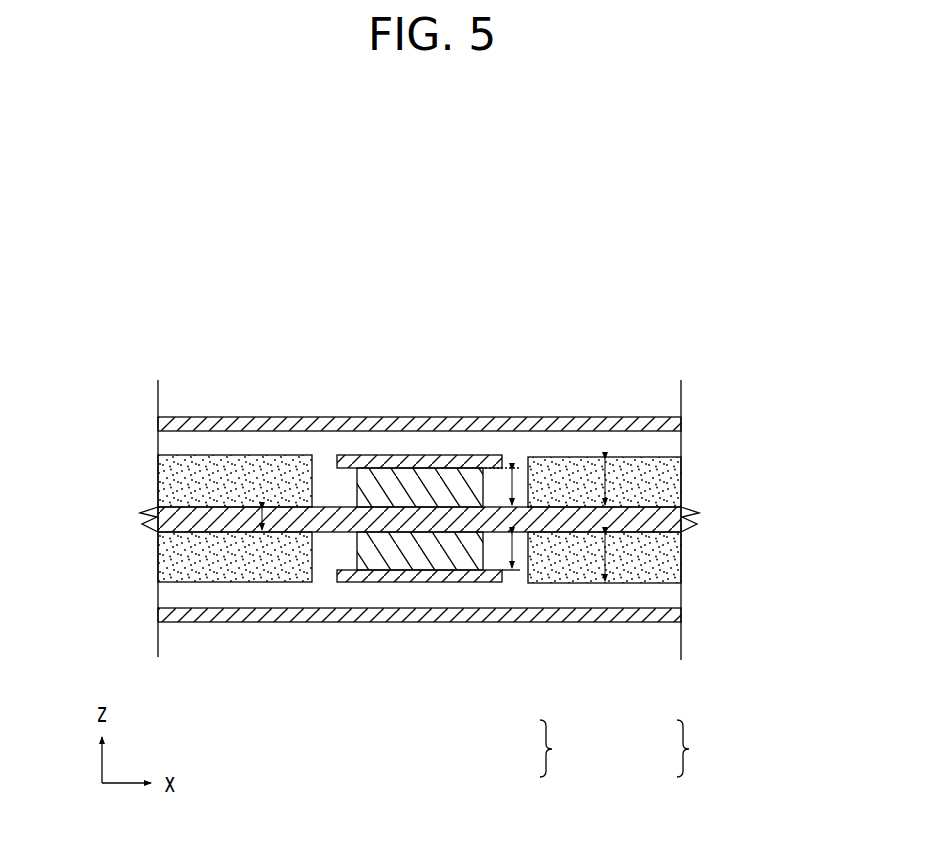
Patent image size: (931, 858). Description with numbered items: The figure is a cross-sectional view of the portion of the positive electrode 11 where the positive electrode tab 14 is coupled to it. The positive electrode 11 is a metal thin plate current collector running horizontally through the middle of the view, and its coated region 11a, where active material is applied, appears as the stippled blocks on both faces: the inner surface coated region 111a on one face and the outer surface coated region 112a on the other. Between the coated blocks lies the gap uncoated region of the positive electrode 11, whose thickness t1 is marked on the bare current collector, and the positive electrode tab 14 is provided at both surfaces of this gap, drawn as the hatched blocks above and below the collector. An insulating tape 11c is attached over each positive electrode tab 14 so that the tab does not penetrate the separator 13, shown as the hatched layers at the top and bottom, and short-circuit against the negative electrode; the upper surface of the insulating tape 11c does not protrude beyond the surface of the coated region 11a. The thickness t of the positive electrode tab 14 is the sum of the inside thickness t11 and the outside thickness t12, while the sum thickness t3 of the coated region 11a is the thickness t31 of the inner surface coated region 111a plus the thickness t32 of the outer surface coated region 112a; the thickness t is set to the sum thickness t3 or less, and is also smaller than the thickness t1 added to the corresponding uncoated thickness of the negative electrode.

The positive electrode 11 is at (131, 494).
The coated region 11a is at (765, 472).
The insulating tape 11c is at (372, 455).
The separator 13 is at (612, 417).
The positive electrode tab 14 is at (387, 558).
The inner surface coated region 111a is at (660, 483).
The outer surface coated region 112a is at (657, 558).
The thickness of the gap uncoated region t1 is at (260, 519).
The inside thickness t11 is at (518, 486).
The outside thickness t12 is at (513, 552).
The thickness of the inner surface coated region t31 is at (586, 482).
The thickness of the outer surface coated region t32 is at (586, 557).
The thickness of the positive electrode tab t is at (534, 749).
The sum thickness of the coated region t3 is at (676, 749).